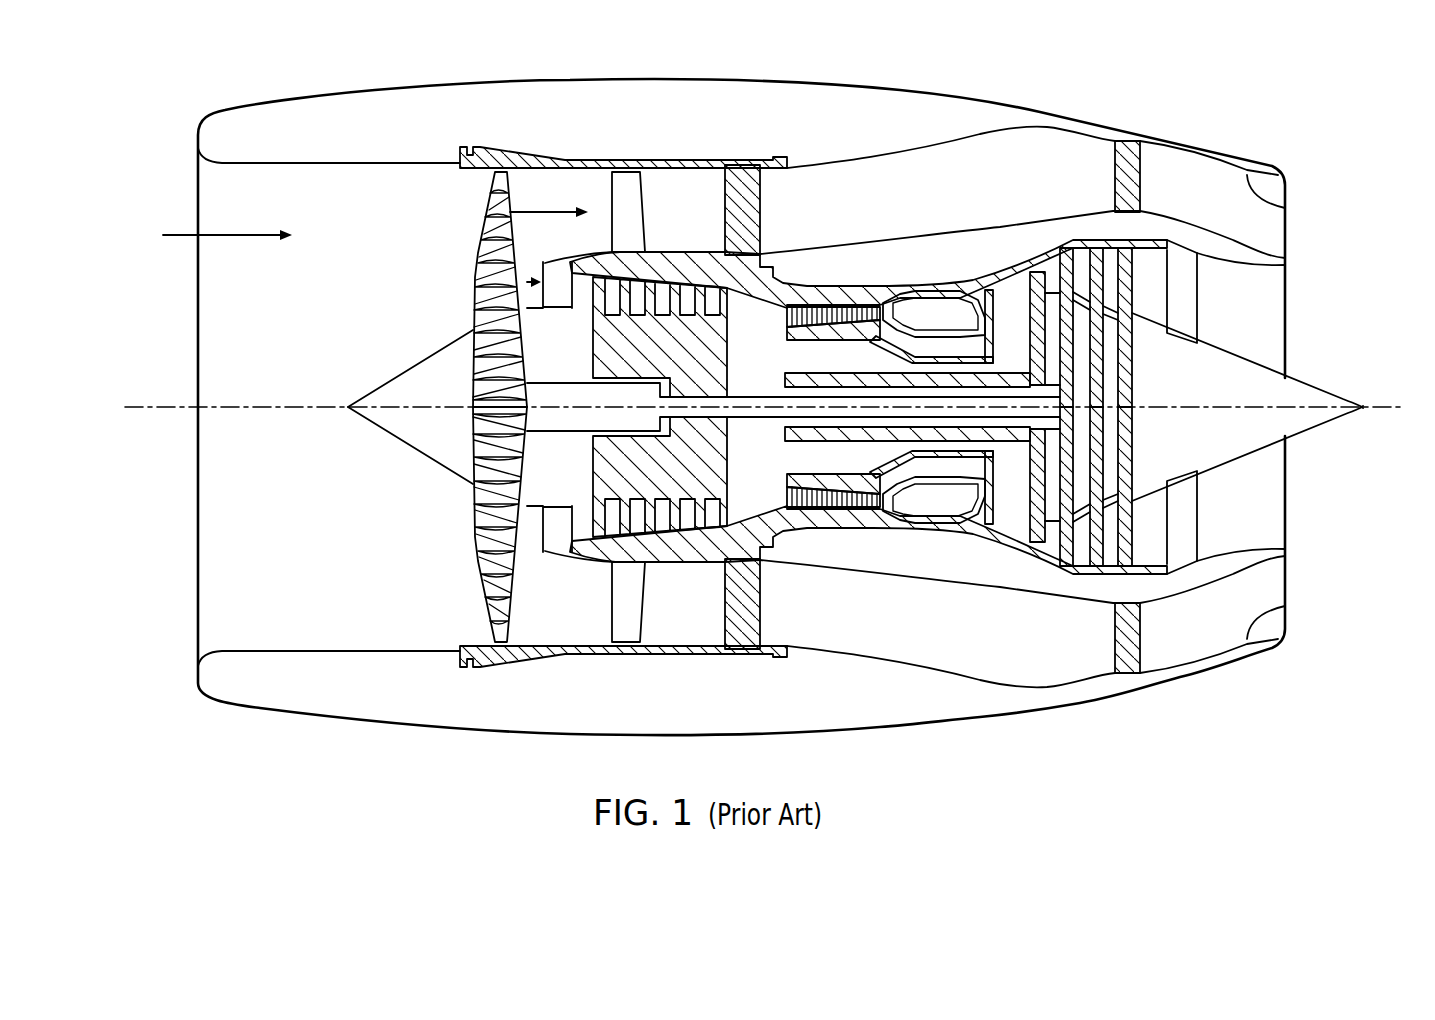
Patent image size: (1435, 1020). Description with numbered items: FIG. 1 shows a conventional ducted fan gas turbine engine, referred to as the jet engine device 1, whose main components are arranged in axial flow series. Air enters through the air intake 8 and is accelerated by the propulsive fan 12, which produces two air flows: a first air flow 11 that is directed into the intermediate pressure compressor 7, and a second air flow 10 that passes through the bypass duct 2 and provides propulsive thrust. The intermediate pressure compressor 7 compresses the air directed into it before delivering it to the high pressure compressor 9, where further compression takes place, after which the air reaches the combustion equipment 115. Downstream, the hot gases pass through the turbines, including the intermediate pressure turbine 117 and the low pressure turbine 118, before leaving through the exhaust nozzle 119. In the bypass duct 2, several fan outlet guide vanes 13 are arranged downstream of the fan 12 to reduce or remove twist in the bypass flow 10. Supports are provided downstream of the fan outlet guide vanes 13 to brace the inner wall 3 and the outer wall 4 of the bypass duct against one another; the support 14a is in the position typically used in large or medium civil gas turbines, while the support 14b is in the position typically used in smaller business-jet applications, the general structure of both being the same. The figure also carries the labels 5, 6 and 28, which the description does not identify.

The jet engine device 1 is at (759, 406).
The bypass duct 2 is at (861, 228).
The inner wall 3 is at (1220, 231).
The outer wall 4 is at (1287, 208).
The incoming air flow 5 is at (227, 221).
The engine axis 6 is at (243, 408).
The intermediate pressure compressor 7 is at (700, 327).
The air intake 8 is at (376, 194).
The high pressure compressor 9 is at (799, 335).
The second air flow 10 is at (547, 203).
The first air flow 11 is at (531, 282).
The propulsive fan 12 is at (503, 200).
The fan outlet guide vanes 13 is at (632, 633).
The support 14a is at (742, 193).
The support 14b is at (1137, 172).
The nacelle 28 is at (858, 115).
The combustion equipment 115 is at (960, 300).
The intermediate pressure turbine 117 is at (1040, 280).
The low pressure turbine 118 is at (1127, 548).
The exhaust nozzle 119 is at (1285, 266).